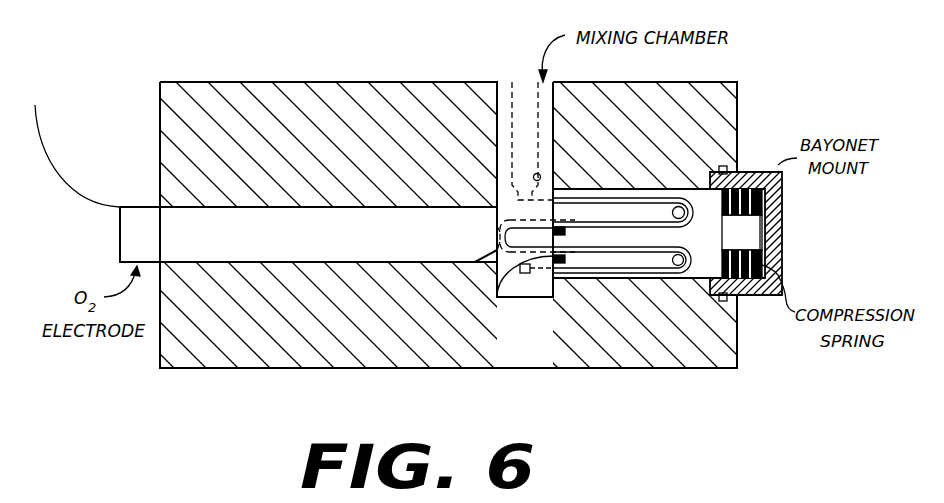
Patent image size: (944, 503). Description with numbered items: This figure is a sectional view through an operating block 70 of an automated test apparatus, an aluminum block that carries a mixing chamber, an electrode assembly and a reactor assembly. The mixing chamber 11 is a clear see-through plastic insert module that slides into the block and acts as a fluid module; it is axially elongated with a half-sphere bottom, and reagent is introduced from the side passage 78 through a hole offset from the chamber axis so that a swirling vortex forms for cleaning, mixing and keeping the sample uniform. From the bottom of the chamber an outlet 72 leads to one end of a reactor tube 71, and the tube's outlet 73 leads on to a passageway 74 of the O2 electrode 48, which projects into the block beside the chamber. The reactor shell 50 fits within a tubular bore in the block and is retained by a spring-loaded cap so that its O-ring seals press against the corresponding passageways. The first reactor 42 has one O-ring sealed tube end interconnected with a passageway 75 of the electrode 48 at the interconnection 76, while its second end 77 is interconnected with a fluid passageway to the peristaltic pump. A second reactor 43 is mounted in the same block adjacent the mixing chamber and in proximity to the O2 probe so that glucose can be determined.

The operating block 70 is at (342, 353).
The outlet 72 is at (436, 162).
The passageway 74 is at (458, 196).
The O2 electrode 48 is at (140, 227).
The mixing chamber 11 is at (503, 82).
The side passage 78 is at (538, 173).
The passageway 75 is at (462, 265).
The interconnection 76 is at (497, 298).
The second end 77 is at (538, 275).
The first reactor 42 is at (618, 280).
The reactor tube 71 is at (556, 187).
The outlet 73 is at (565, 200).
The second reactor 43 is at (628, 188).
The reactor shell 50 is at (652, 178).